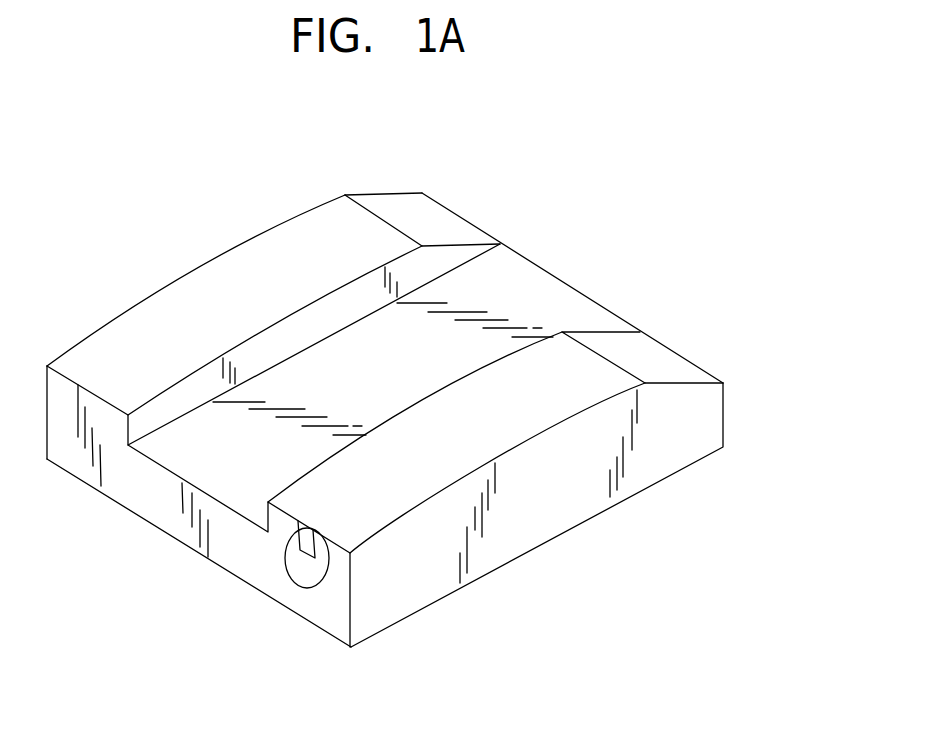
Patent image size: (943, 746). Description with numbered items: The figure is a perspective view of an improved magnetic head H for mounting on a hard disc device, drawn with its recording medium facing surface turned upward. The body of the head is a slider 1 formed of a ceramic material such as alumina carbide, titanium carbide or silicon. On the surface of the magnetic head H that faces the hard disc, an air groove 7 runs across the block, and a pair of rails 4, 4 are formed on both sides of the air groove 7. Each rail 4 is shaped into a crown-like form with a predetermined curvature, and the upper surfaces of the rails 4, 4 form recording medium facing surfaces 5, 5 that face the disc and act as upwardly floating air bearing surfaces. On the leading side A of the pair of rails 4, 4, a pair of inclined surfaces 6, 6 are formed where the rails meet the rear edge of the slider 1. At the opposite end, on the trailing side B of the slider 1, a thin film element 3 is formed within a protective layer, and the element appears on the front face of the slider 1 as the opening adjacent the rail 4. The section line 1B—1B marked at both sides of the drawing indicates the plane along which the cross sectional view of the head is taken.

The slider 1 is at (75, 450).
The thin film element 3 is at (312, 578).
The rail 4 is at (147, 276).
The recording medium facing surface 5 is at (252, 266).
The inclined surface 6 is at (403, 218).
The air groove 7 is at (200, 450).
The magnetic head H is at (527, 204).
The leading side A is at (600, 279).
The trailing side B is at (167, 557).
The section line 1B— 1B is at (837, 355).